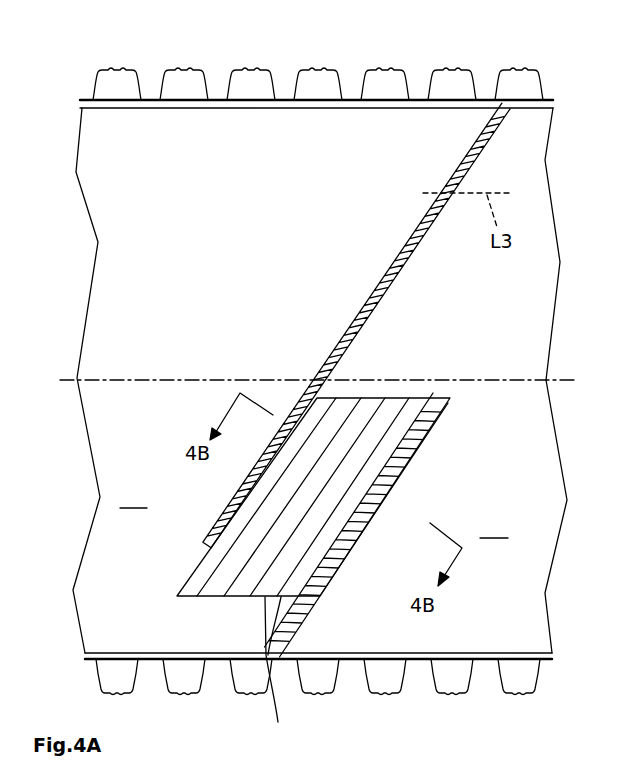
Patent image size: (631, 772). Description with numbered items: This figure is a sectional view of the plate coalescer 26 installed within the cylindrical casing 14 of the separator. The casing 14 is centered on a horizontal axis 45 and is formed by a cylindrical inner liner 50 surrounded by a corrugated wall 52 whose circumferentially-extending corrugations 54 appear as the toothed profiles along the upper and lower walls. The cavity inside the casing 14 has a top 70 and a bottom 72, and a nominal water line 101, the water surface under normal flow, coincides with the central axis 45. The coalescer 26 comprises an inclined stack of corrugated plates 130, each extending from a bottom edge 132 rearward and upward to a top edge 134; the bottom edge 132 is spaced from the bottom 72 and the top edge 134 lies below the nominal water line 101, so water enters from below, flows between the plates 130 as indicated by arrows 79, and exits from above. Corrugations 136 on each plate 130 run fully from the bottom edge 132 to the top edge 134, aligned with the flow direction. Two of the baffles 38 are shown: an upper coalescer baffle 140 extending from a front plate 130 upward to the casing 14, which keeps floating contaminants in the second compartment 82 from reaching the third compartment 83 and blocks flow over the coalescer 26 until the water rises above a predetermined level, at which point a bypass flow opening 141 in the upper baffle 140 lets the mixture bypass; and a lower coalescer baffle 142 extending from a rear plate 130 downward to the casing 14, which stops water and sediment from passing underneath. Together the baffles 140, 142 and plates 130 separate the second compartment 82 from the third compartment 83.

The cylindrical casing 14 is at (510, 66).
The plate coalescer 26 is at (414, 368).
The baffles 38 is at (350, 323).
The horizontal axis 45 is at (183, 382).
The cylindrical inner liner 50 is at (318, 108).
The corrugated wall 52 is at (318, 58).
The corrugations 54 is at (245, 70).
The top 70 is at (203, 108).
The bottom 72 is at (120, 655).
The arrows 79 is at (397, 398).
The second compartment 82 is at (133, 498).
The third compartment 83 is at (494, 528).
The nominal water line 101 is at (127, 382).
The corrugated plates 130 is at (336, 493).
The bottom edge 132 is at (280, 676).
The top edge 134 is at (352, 398).
The corrugations 136 is at (328, 532).
The upper coalescer baffle 140 is at (383, 279).
The bypass flow opening 141 is at (450, 178).
The lower coalescer baffle 142 is at (320, 595).